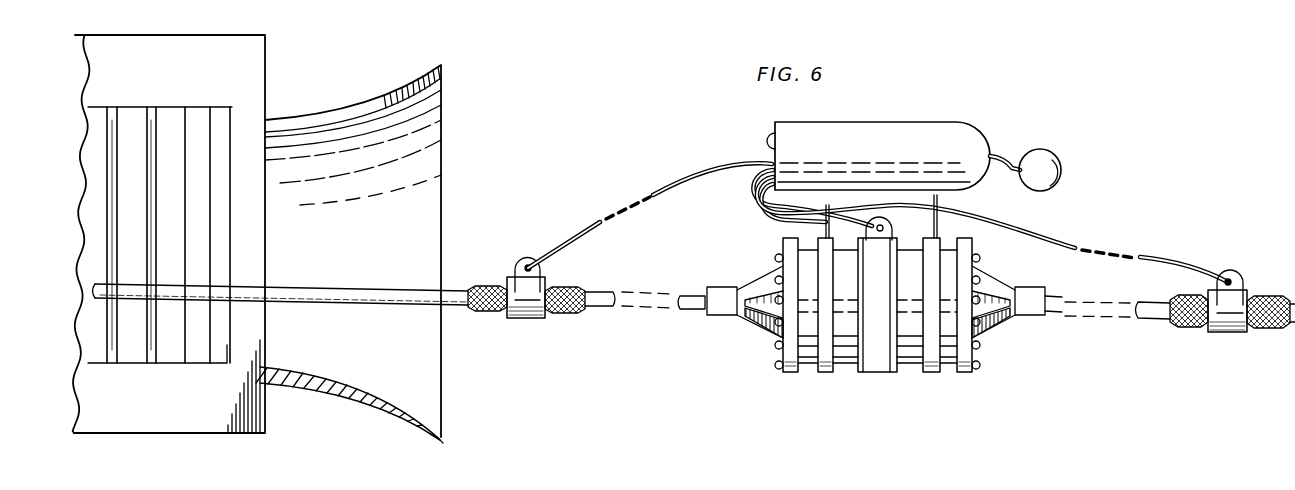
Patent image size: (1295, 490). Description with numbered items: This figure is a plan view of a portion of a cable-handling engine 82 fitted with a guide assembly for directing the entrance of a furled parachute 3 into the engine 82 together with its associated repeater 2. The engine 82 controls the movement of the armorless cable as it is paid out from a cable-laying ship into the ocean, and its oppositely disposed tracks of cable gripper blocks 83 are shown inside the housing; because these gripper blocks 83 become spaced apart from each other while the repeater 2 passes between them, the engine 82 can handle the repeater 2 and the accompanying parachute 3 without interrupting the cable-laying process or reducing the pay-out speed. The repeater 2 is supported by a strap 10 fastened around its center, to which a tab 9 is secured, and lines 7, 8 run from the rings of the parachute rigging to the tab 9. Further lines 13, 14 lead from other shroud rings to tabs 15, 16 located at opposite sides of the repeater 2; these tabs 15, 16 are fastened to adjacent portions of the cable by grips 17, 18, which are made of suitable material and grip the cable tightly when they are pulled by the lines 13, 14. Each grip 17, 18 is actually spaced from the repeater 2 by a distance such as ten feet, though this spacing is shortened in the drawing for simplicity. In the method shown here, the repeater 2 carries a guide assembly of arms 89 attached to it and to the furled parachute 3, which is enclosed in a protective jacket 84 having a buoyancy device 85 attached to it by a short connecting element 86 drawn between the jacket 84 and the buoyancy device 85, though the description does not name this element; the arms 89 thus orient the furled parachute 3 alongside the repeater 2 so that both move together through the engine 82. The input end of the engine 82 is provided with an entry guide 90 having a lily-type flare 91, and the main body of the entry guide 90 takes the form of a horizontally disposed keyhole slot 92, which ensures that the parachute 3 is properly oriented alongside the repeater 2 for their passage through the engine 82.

The repeater 2 is at (845, 377).
The parachute 3 is at (765, 137).
The line 7 is at (758, 195).
The line 8 is at (768, 206).
The tab 9 is at (886, 233).
The strap 10 is at (888, 376).
The line 13 is at (1181, 268).
The line 14 is at (586, 233).
The tab 15 is at (1243, 276).
The tab 16 is at (521, 258).
The grip 17 is at (1268, 326).
The grip 18 is at (553, 313).
The cable-handling engine 82 is at (262, 80).
The cable gripper blocks 83 is at (165, 115).
The protective jacket 84 is at (880, 122).
The buoyancy device 85 is at (1061, 167).
The stem 86 is at (1000, 157).
The arms 89 is at (823, 225).
The entry guide 90 is at (300, 367).
The lily-type flare 91 is at (440, 440).
The keyhole slot 92 is at (310, 127).